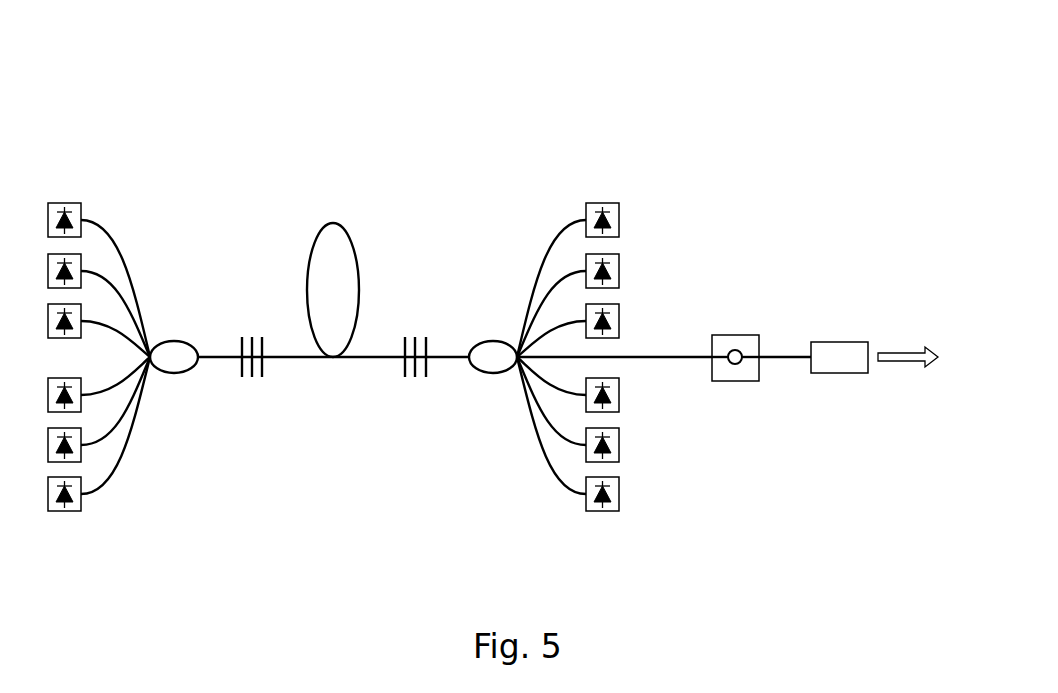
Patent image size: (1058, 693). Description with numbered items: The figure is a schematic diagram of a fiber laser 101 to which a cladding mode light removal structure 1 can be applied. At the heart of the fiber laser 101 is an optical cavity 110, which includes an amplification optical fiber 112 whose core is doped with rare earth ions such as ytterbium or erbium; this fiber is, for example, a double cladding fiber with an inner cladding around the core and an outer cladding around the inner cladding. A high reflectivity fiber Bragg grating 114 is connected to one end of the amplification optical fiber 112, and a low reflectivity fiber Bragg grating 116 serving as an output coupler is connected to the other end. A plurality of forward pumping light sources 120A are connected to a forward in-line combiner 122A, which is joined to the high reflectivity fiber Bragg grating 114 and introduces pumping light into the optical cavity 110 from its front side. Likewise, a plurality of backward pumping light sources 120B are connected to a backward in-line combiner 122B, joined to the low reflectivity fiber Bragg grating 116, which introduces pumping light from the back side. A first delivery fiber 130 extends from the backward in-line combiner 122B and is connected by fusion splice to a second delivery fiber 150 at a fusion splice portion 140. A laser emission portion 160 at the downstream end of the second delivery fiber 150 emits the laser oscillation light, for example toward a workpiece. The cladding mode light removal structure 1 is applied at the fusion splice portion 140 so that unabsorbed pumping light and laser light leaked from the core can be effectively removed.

The fiber laser 101 is at (755, 68).
The optical cavity 110 is at (438, 465).
The amplification optical fiber 112 is at (318, 232).
The high reflectivity fiber Bragg grating 114 is at (252, 388).
The low reflectivity fiber Bragg grating 116 is at (413, 388).
The forward pumping light sources 120A is at (65, 203).
The backward pumping light sources 120B is at (603, 203).
The forward in-line combiner 122A is at (174, 373).
The backward in-line combiner 122B is at (493, 373).
The first delivery fiber 130 is at (652, 365).
The cladding mode light removal structure 1 is at (736, 335).
The fusion splice portion 140 is at (733, 365).
The second delivery fiber 150 is at (783, 360).
The laser emission portion 160 is at (837, 373).